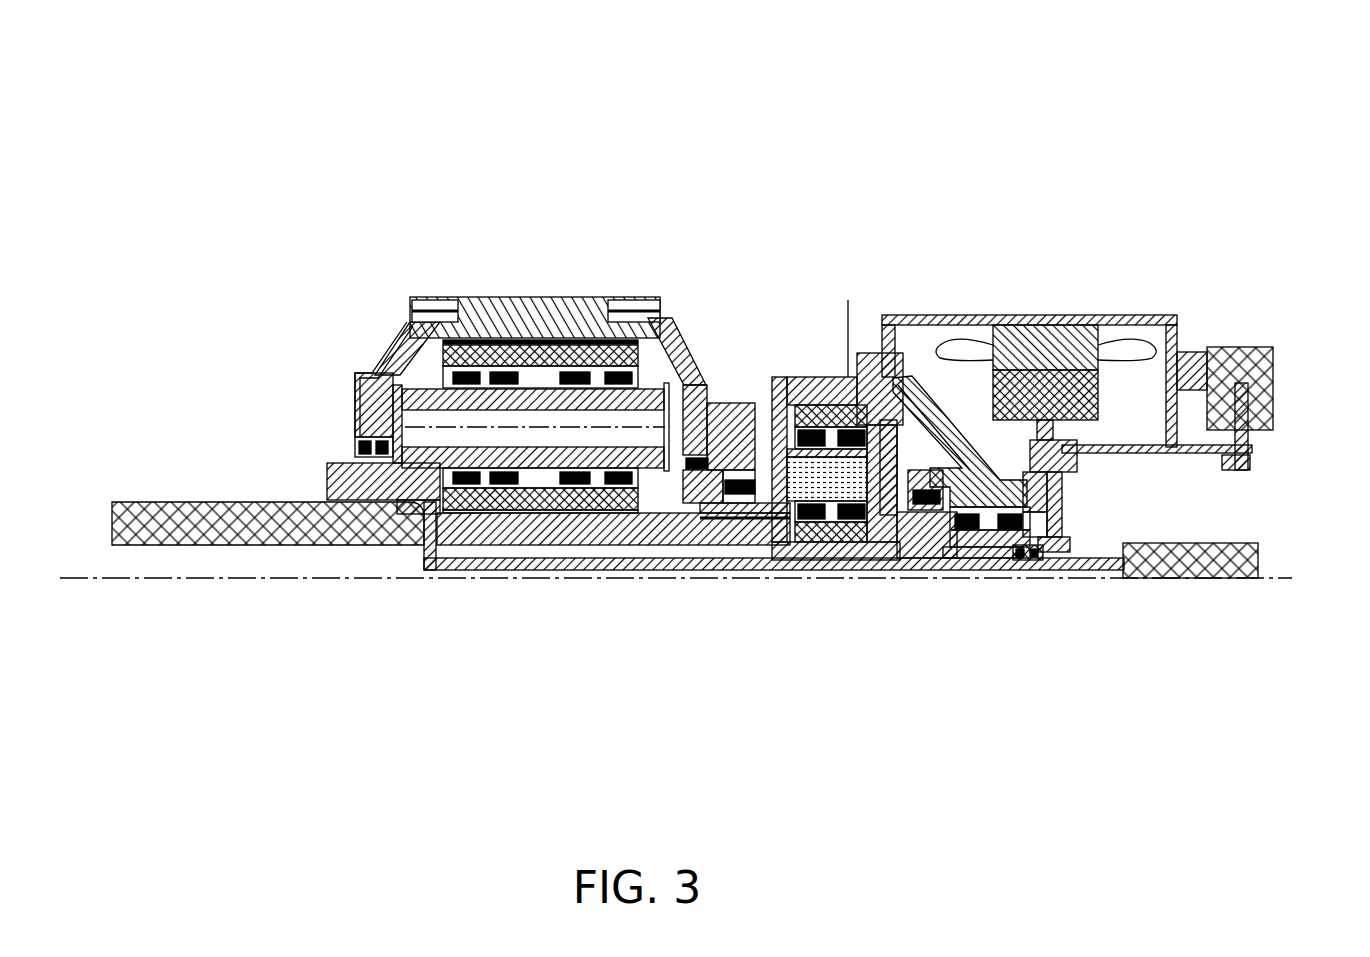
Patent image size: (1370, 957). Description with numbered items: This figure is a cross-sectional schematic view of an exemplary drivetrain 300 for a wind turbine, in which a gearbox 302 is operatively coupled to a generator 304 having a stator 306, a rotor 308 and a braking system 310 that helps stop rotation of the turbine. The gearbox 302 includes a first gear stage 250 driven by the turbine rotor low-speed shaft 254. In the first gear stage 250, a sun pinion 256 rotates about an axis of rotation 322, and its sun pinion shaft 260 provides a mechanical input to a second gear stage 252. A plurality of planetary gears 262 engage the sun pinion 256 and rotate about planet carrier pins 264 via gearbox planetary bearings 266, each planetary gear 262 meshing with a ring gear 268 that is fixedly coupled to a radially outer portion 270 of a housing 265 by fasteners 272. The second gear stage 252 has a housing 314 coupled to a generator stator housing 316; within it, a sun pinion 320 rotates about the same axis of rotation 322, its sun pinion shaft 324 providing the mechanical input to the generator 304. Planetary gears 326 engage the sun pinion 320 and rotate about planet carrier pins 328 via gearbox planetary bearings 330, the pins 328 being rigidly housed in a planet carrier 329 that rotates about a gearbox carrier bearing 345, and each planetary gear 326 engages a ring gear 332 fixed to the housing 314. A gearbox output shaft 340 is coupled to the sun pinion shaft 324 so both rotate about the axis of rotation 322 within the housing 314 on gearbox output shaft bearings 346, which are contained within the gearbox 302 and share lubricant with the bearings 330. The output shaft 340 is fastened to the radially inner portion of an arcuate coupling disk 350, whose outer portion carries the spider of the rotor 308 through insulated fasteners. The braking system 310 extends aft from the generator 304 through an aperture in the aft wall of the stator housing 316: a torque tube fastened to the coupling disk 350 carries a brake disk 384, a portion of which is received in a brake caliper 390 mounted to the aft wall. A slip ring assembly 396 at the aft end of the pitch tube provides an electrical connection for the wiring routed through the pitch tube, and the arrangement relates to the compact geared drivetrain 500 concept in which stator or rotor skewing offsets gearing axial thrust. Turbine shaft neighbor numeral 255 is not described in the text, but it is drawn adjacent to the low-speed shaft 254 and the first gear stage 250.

The drivetrain 300 is at (632, 115).
The gearbox 302 is at (528, 272).
The generator 304 is at (1019, 228).
The first gear stage 250 is at (507, 297).
The second gear stage 252 is at (833, 340).
The turbine rotor (low-speed) shaft 254 is at (303, 547).
The bottom plate 255 is at (497, 573).
The sun pinion 256 is at (327, 473).
The sun pinion shaft 260 is at (630, 547).
The planetary gears 262 is at (402, 348).
The planet carrier pins 264 is at (363, 410).
The housing 265 is at (367, 378).
The gearbox planetary bearings 266 is at (585, 300).
The ring gear 268 is at (470, 307).
The radially outer portion of housing 270 is at (685, 312).
The fasteners 272 is at (407, 307).
The stator 306 is at (1082, 320).
The rotor 308 is at (1100, 390).
The braking system 310 is at (1255, 325).
The housing 314 is at (928, 418).
The generator stator housing 316 is at (1018, 313).
The sun pinion 320 is at (795, 572).
The axis of rotation 322 is at (113, 582).
The sun pinion shaft 324 is at (877, 567).
The planetary gears 326 is at (849, 300).
The planet carrier pins 328 is at (750, 545).
The planet carrier 329 is at (895, 573).
The gearbox planetary bearings 330 is at (813, 567).
The ring gear 332 is at (830, 377).
The gearbox output shaft 340 is at (983, 580).
The gearbox carrier bearing 345 is at (933, 577).
The gearbox output shaft bearings 346 is at (1043, 577).
The coupling disk 350 is at (1067, 480).
The brake disk 384 is at (1250, 445).
The brake caliper 390 is at (1273, 358).
The slip ring assembly 396 is at (1175, 578).
The compact geared drivetrain 500 is at (1138, 738).